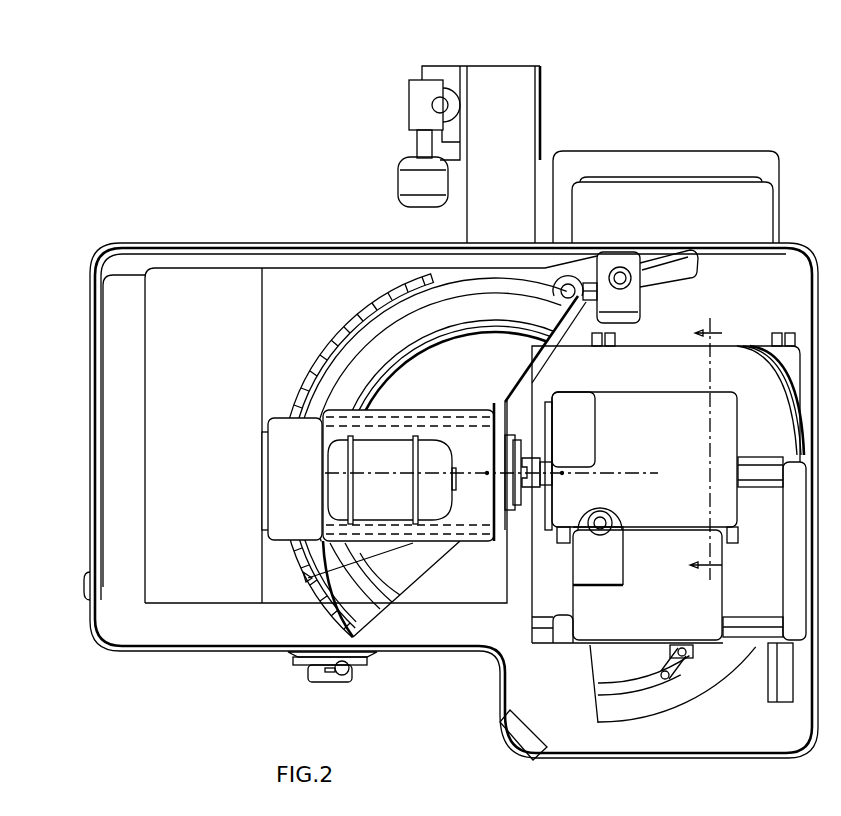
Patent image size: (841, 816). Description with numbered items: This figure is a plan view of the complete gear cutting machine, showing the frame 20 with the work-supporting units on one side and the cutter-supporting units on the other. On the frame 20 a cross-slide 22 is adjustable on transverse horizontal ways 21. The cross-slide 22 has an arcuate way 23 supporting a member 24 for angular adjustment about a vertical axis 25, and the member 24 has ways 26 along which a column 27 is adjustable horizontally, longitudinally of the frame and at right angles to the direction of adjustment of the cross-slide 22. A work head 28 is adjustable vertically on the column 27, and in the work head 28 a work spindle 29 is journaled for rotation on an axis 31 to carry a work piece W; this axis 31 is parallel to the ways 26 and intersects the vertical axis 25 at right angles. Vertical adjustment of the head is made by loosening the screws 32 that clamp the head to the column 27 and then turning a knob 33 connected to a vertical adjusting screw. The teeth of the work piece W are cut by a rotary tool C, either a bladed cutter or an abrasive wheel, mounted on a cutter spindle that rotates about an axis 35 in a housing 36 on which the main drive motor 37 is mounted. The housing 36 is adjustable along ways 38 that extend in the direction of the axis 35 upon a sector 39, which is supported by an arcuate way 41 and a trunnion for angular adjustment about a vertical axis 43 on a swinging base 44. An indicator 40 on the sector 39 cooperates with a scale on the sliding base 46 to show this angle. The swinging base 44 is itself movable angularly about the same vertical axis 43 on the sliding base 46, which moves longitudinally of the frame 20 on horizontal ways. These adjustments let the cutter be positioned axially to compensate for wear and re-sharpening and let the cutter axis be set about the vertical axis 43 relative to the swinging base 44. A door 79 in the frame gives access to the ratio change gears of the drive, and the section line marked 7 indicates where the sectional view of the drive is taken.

The door 79 is at (90, 575).
The swinging base 44 is at (424, 456).
The arcuate way 41 is at (383, 366).
The sector 39 is at (372, 552).
The indicator 40 is at (303, 576).
The housing 36 is at (408, 463).
The ways 38 is at (438, 417).
The main drive motor 37 is at (388, 501).
The axis 35 is at (453, 481).
The vertical axis 43 is at (487, 471).
The work piece W is at (521, 462).
The rotary tool C is at (508, 504).
The vertical axis 25 is at (562, 476).
The work spindle 29 is at (546, 460).
The cross-slide 22 is at (701, 384).
The transverse horizontal ways 21 is at (612, 349).
The arcuate way 23 is at (777, 409).
The work head 28 is at (667, 441).
The screws 32 is at (738, 540).
The knob 33 is at (598, 512).
The axis 31 is at (640, 476).
The column 27 is at (669, 594).
The member 24 is at (761, 577).
The ways 26 is at (765, 478).
The frame 20 is at (551, 701).
The section line 7- 7 is at (706, 449).
The sliding base 46 is at (469, 594).